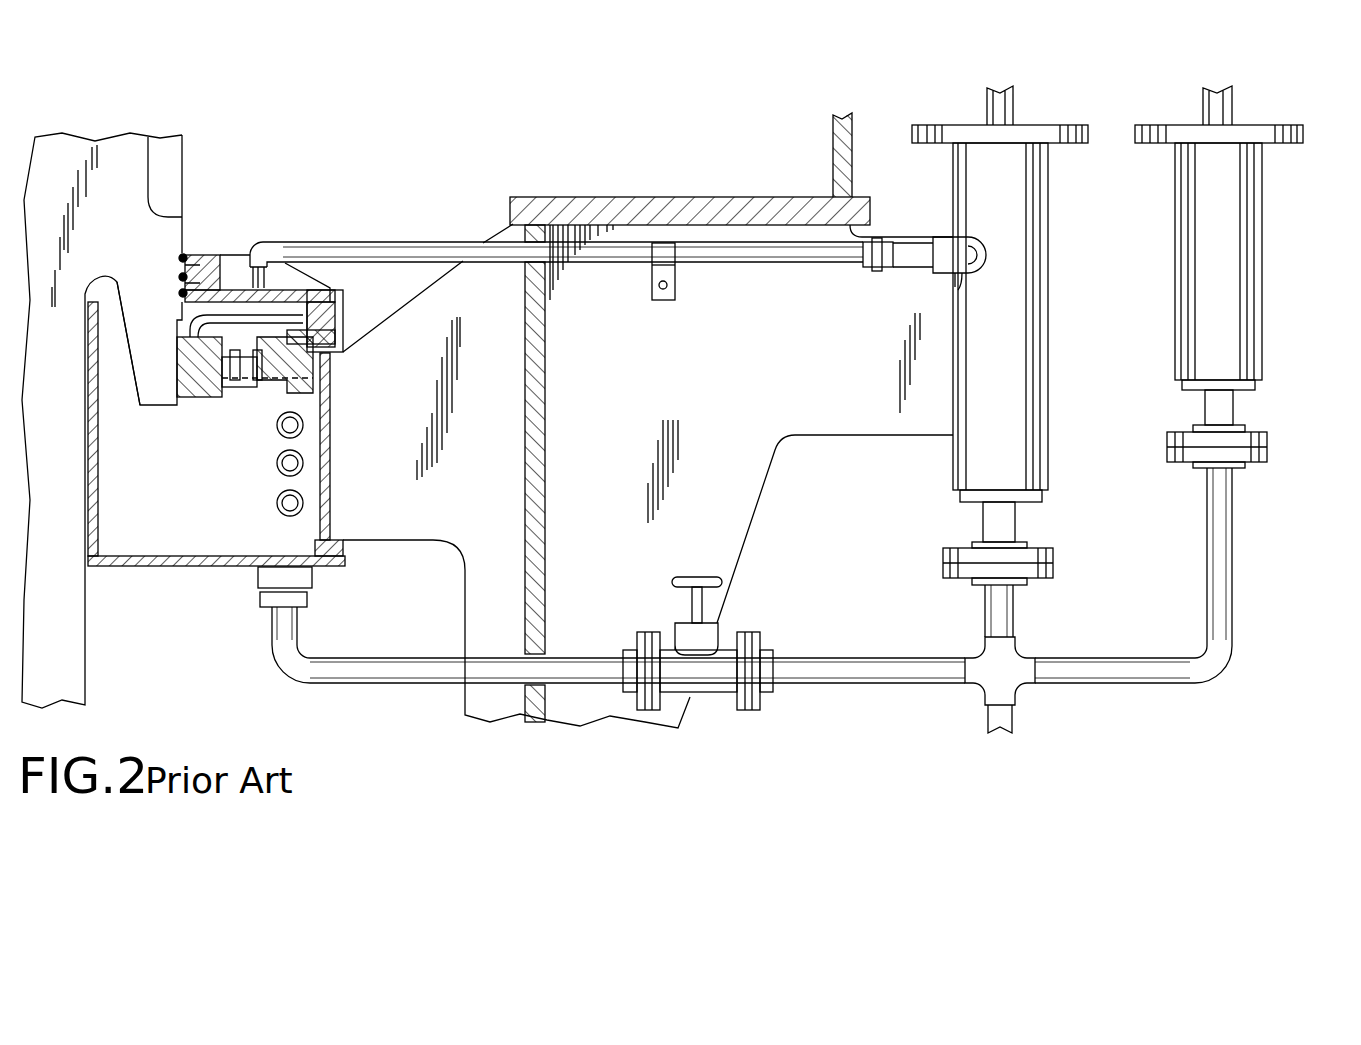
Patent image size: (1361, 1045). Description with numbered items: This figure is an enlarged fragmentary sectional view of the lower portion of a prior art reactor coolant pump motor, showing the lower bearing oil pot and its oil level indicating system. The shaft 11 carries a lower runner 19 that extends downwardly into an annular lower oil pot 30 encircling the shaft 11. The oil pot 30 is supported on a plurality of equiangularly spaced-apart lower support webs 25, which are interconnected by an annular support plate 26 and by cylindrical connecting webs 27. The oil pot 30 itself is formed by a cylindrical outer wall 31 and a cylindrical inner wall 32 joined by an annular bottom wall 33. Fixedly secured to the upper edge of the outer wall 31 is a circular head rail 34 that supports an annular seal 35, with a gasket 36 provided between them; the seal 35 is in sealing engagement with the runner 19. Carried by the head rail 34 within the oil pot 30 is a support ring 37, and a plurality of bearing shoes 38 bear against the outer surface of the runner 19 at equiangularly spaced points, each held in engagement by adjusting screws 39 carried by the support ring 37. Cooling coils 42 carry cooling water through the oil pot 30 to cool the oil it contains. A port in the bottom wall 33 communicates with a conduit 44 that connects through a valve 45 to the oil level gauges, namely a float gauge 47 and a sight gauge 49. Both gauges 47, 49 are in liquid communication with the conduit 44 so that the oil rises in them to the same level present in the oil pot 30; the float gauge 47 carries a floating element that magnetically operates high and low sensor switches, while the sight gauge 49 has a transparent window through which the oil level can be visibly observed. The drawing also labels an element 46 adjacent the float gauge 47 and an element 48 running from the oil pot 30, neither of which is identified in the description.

The shaft 11 is at (77, 653).
The lower runner 19 is at (137, 356).
The lower support webs 25 is at (398, 528).
The annular support plate 26 is at (640, 196).
The cylindrical connecting webs 27 is at (549, 524).
The lower oil pot 30 is at (242, 470).
The cylindrical outer wall 31 is at (333, 478).
The cylindrical inner wall 32 is at (100, 493).
The annular bottom wall 33 is at (188, 556).
The circular head rail 34 is at (337, 330).
The annular seal 35 is at (207, 253).
The gasket 36 is at (335, 303).
The support ring 37 is at (307, 387).
The bearing shoes 38 is at (203, 393).
The adjusting screws 39 is at (245, 388).
The cooling coils 42 is at (277, 504).
The conduit 44 is at (268, 652).
The valve 45 is at (710, 693).
The elbow fitting 46 is at (962, 278).
The float gauge 47 is at (1056, 262).
The tube 48 is at (367, 243).
The sight gauge 49 is at (1272, 255).